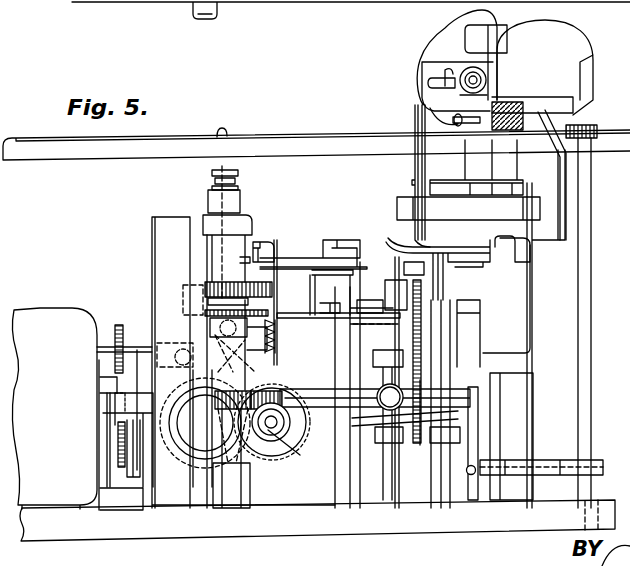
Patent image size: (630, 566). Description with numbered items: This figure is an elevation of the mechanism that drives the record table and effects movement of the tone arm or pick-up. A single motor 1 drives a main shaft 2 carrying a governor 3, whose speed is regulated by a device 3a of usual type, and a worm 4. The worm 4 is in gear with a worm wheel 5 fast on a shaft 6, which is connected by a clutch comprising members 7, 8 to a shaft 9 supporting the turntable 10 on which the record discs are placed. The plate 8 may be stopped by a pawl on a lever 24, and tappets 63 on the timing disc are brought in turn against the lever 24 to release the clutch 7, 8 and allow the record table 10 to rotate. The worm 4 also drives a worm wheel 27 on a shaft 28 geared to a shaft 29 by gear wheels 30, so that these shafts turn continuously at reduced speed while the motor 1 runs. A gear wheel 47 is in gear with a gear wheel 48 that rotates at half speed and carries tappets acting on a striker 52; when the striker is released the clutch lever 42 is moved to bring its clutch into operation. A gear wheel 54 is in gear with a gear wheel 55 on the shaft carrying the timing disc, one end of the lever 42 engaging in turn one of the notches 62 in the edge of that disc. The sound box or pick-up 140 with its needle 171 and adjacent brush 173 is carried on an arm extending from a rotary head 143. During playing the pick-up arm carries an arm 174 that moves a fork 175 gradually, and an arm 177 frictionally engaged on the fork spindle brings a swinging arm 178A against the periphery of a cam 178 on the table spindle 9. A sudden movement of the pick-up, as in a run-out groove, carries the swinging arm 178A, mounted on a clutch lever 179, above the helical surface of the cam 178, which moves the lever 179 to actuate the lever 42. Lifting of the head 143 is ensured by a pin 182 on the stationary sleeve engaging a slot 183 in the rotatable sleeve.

The motor 1 is at (52, 327).
The main shaft 2 is at (110, 404).
The governor 3 is at (395, 428).
The governor regulating device 3a is at (475, 445).
The worm 4 is at (268, 432).
The worm wheel 5 is at (212, 410).
The shaft 6 is at (225, 353).
The clutch driven member 7 is at (262, 287).
The clutch plate 8 is at (250, 312).
The table spindle 9 is at (197, 196).
The turntable 10 is at (318, 142).
The lever 24 is at (302, 313).
The worm wheel 27 is at (310, 425).
The shaft 28 is at (268, 440).
The shaft 29 is at (215, 402).
The gear wheels 30 is at (232, 467).
The clutch lever 42 is at (138, 350).
The gear wheel 47 is at (117, 323).
The gear wheel 48 is at (122, 448).
The striker 52 is at (133, 467).
The gear wheel 54 is at (425, 413).
The gear wheel 55 is at (418, 283).
The notches 62 is at (393, 278).
The tappets 63 is at (420, 268).
The sound box or pick-up 140 is at (560, 45).
The rotary head 143 is at (450, 35).
The needle 171 is at (540, 113).
The brush 173 is at (513, 100).
The arm 174 is at (393, 176).
The fork 175 is at (312, 253).
The arm 177 is at (281, 250).
The cam 178 is at (233, 262).
The swinging arm 178A is at (273, 255).
The clutch lever 179 is at (238, 365).
The pin 182 is at (432, 83).
The slot 183 is at (443, 75).